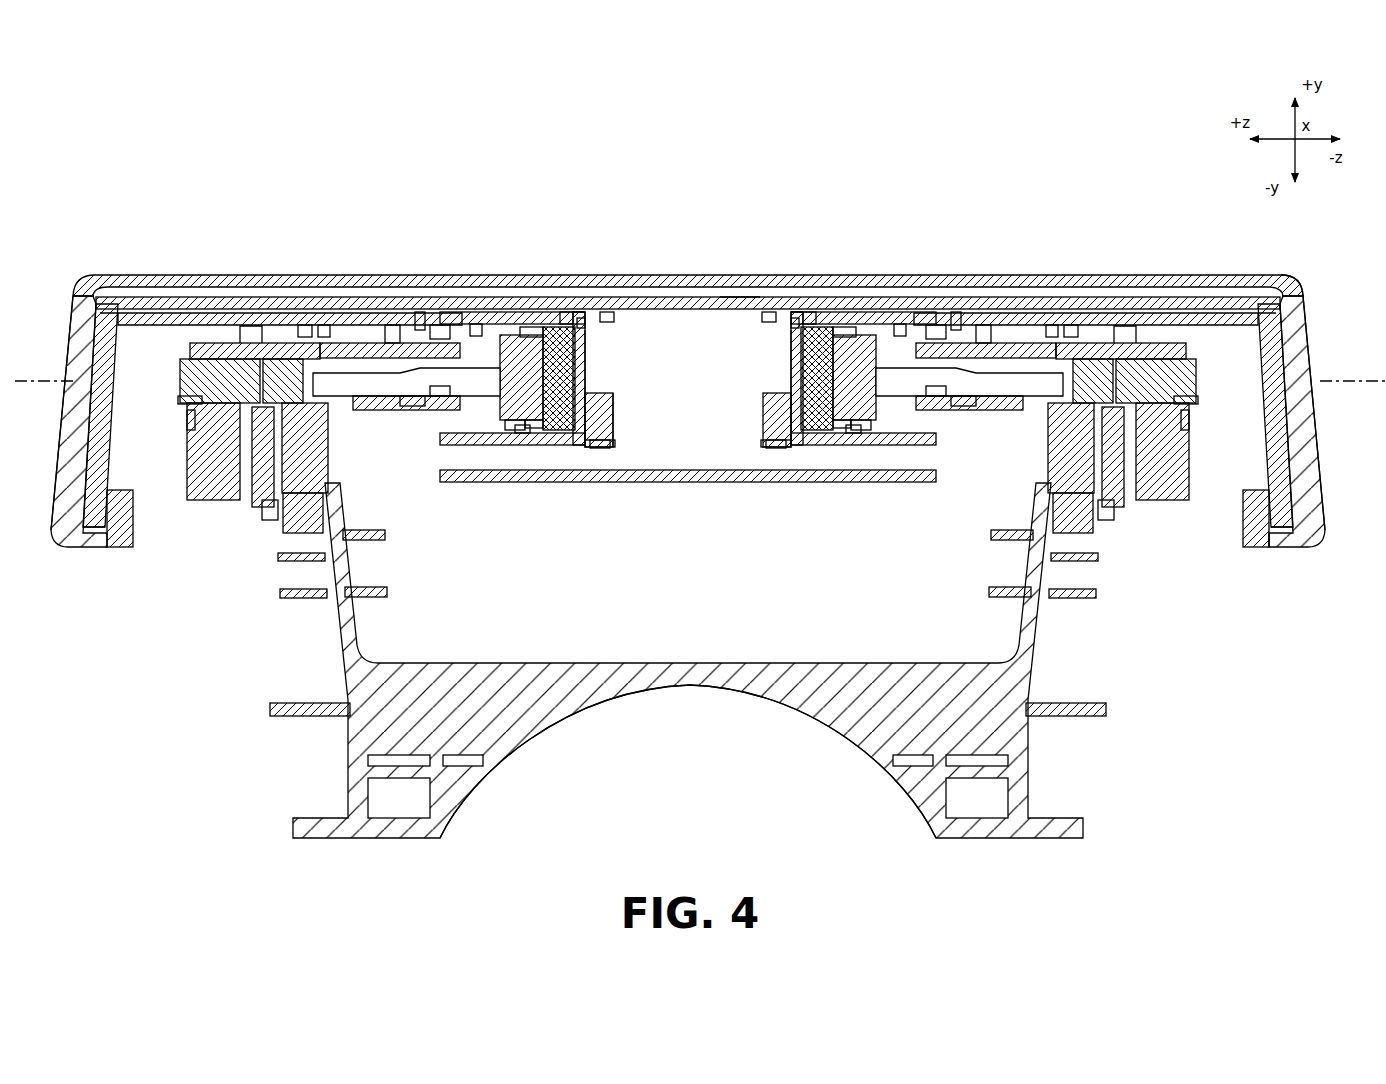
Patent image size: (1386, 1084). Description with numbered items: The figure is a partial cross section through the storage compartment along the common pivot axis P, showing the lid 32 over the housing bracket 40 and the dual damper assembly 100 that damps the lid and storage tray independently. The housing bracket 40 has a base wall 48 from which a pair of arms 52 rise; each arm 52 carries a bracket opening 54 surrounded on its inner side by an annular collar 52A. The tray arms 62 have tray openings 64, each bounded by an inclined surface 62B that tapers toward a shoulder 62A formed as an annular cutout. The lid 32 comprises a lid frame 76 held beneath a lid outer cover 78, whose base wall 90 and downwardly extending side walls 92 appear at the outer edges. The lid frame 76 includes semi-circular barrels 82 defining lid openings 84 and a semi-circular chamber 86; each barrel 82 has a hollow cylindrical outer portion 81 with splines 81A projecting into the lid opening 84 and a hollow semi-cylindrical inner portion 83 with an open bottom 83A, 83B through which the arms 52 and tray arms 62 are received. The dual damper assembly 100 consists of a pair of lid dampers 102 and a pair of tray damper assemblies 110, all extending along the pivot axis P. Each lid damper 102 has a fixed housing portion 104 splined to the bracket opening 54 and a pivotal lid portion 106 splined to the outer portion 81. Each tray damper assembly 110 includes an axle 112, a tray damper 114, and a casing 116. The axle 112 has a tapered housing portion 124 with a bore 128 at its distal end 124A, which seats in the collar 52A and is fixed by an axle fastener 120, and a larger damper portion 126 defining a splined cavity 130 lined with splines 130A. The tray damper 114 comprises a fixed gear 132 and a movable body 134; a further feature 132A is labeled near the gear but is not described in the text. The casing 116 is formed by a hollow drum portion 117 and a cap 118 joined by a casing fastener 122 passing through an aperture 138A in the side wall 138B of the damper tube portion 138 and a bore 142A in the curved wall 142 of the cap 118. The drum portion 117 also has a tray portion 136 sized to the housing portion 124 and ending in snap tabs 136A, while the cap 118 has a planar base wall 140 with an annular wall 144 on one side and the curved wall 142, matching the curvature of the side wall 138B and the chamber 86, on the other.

The lid 32 is at (1322, 296).
The housing bracket 40 is at (607, 660).
The base wall 48 is at (712, 665).
The arms 52 is at (322, 500).
The annular collar 52A is at (320, 430).
The bracket opening 54 is at (228, 420).
The tray arms 62 is at (367, 373).
The shoulder 62A is at (410, 406).
The inclined surface 62B is at (445, 398).
The tray openings 64 is at (305, 325).
The lid frame 76 is at (1242, 508).
The lid outer cover 78 is at (1255, 288).
The outer portion 81 is at (172, 290).
The splines 81A is at (110, 527).
The barrels 82 is at (235, 313).
The inner portion 83 is at (262, 313).
The open bottom 83A is at (440, 325).
The open bottoms 83B is at (193, 418).
The lid openings 84 is at (250, 297).
The semi-circular chamber 86 is at (698, 483).
The base wall 90 is at (740, 272).
The side walls 92 is at (1322, 345).
The dual damper assembly 100 is at (743, 358).
The lid damper 102 is at (176, 368).
The housing portion 104 is at (264, 470).
The lid portion 106 is at (183, 401).
The tray damper assembly 110 is at (612, 312).
The axle 112 is at (420, 315).
The tray damper 114 is at (520, 335).
The casing 116 is at (577, 445).
The hollow drum portion 117 is at (495, 312).
The cap 118 is at (770, 384).
The axle fastener 120 is at (290, 320).
The casing fastener 122 is at (764, 410).
The housing portion 124 is at (392, 325).
The distal end 124A is at (275, 462).
The damper portion 126 is at (477, 330).
The bore 128 is at (325, 325).
The splined cavity 130 is at (510, 430).
The splines 130A is at (520, 430).
The fixed gear 132 is at (535, 425).
The bearing ring lip 132A is at (530, 428).
The movable body 134 is at (567, 315).
The tray portion 136 is at (378, 343).
The snap tabs 136A is at (358, 343).
The damper tube portion 138 is at (552, 327).
The aperture 138A is at (760, 445).
The side wall 138B is at (468, 447).
The base wall 140 is at (598, 352).
The curved wall 142 is at (764, 430).
The bore 142A is at (598, 447).
The annular wall 144 is at (583, 320).
The common pivot axis P is at (1338, 385).